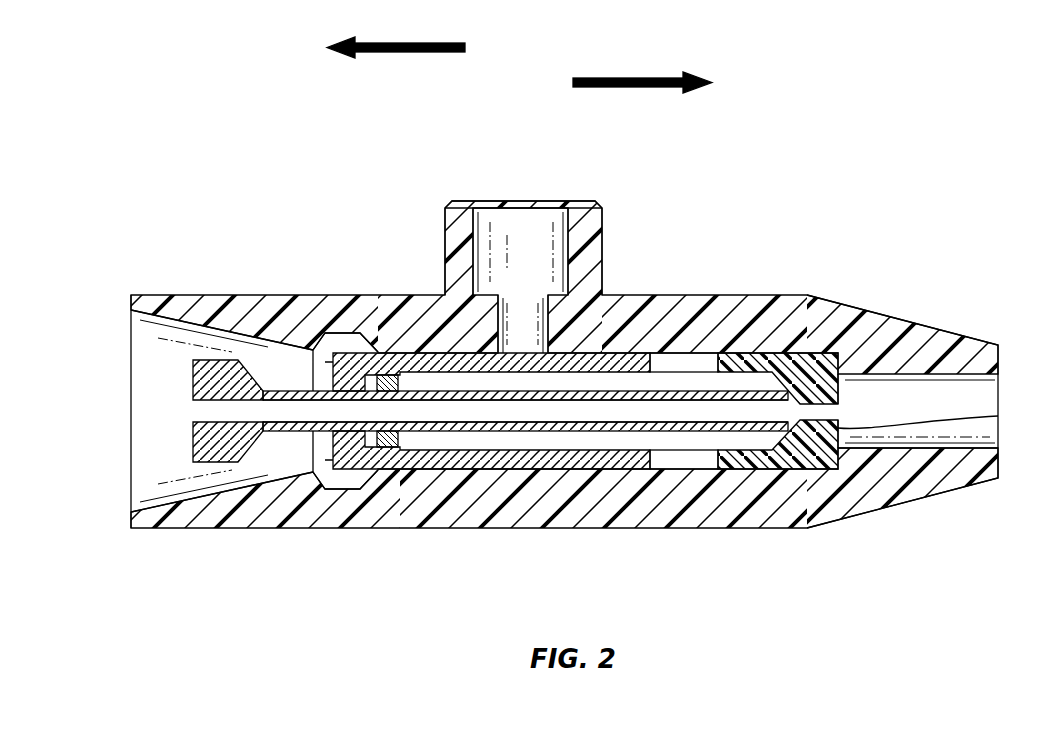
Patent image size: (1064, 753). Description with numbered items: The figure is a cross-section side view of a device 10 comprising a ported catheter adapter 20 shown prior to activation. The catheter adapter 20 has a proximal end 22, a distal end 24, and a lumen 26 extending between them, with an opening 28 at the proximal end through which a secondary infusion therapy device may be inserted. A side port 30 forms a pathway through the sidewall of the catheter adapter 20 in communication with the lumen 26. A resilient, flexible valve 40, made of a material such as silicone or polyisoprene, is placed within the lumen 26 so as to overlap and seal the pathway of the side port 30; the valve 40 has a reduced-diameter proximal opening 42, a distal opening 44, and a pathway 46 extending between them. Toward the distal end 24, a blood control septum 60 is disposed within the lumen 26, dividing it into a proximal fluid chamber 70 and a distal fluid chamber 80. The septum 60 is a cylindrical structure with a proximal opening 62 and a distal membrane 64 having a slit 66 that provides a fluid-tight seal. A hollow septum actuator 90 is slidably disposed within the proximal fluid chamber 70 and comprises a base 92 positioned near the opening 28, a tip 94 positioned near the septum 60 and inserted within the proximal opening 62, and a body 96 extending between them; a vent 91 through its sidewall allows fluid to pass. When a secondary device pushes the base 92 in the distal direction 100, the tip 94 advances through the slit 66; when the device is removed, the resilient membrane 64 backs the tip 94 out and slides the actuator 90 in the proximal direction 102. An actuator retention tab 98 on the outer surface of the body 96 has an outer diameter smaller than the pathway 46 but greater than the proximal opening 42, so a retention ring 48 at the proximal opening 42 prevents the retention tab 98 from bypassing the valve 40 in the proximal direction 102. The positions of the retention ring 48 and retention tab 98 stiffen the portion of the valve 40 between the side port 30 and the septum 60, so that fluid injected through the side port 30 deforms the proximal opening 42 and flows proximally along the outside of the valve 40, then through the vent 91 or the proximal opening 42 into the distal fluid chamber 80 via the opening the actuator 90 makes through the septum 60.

The device 10 is at (905, 138).
The ported catheter adapter 20 is at (250, 295).
The proximal end 22 is at (131, 507).
The distal end 24 is at (948, 327).
The lumen 26 is at (172, 483).
The opening 28 is at (142, 337).
The side port 30 is at (600, 212).
The valve 40 is at (483, 466).
The proximal opening 42 is at (320, 455).
The distal opening 44 is at (653, 438).
The pathway 46 is at (540, 387).
The retention ring 48 is at (385, 450).
The blood control septum 60 is at (815, 463).
The proximal opening 62 is at (717, 378).
The distal membrane 64 is at (842, 395).
The slit 66 is at (993, 417).
The proximal fluid chamber 70 is at (298, 362).
The distal fluid chamber 80 is at (985, 397).
The septum actuator 90 is at (527, 425).
The vent 91 is at (300, 367).
The base 92 is at (195, 432).
The tip 94 is at (792, 382).
The body 96 is at (690, 392).
The actuator retention tab 98 is at (420, 356).
The distal direction 100 is at (637, 77).
The proximal direction 102 is at (388, 53).